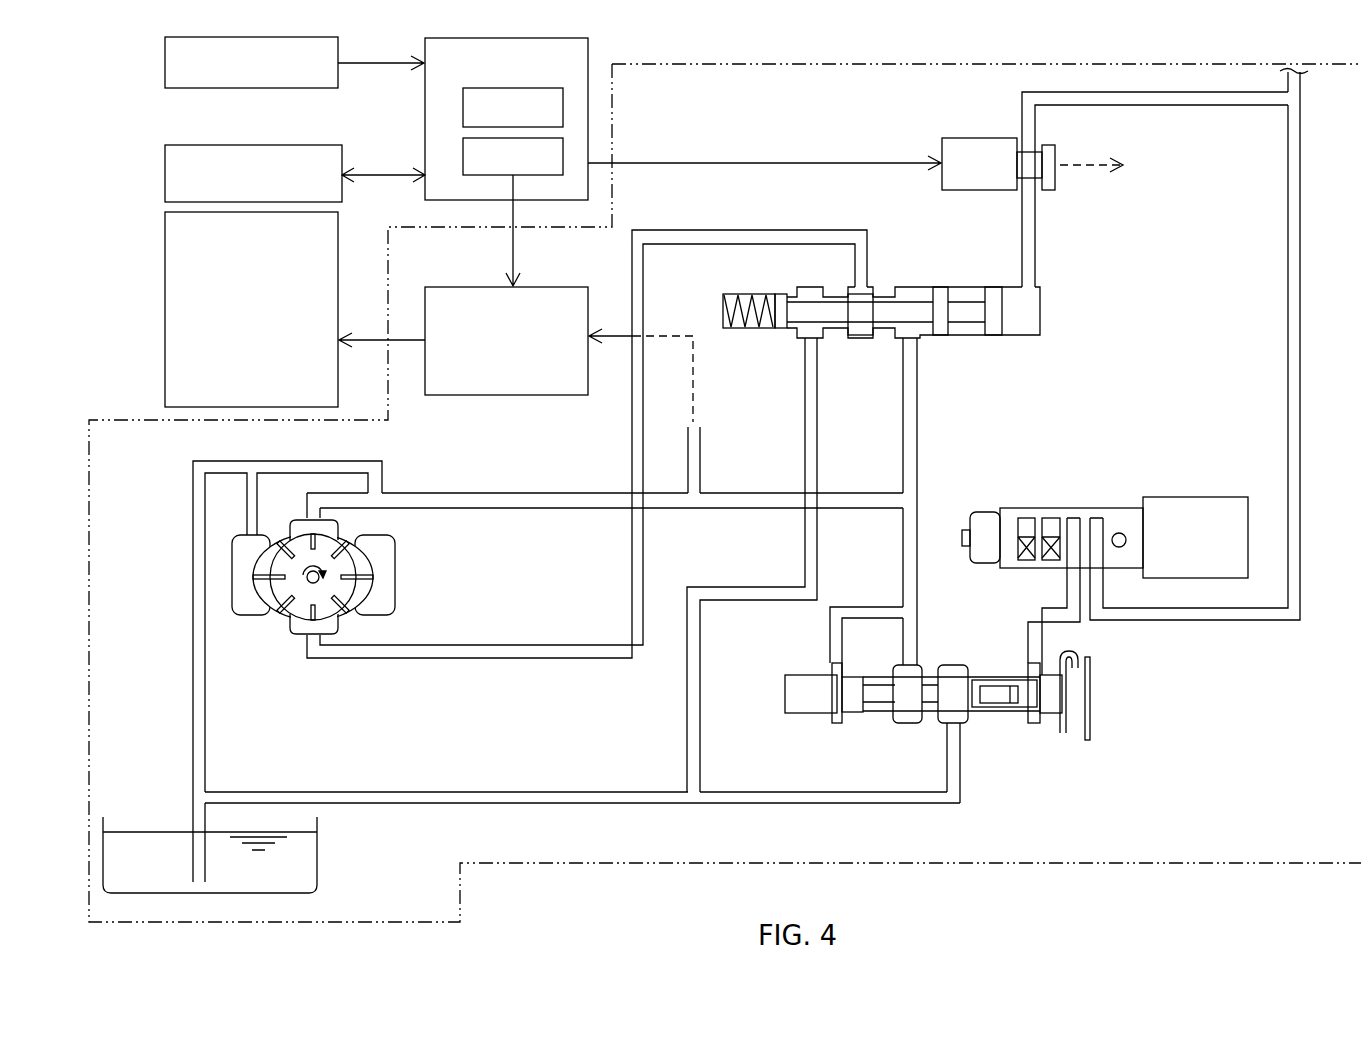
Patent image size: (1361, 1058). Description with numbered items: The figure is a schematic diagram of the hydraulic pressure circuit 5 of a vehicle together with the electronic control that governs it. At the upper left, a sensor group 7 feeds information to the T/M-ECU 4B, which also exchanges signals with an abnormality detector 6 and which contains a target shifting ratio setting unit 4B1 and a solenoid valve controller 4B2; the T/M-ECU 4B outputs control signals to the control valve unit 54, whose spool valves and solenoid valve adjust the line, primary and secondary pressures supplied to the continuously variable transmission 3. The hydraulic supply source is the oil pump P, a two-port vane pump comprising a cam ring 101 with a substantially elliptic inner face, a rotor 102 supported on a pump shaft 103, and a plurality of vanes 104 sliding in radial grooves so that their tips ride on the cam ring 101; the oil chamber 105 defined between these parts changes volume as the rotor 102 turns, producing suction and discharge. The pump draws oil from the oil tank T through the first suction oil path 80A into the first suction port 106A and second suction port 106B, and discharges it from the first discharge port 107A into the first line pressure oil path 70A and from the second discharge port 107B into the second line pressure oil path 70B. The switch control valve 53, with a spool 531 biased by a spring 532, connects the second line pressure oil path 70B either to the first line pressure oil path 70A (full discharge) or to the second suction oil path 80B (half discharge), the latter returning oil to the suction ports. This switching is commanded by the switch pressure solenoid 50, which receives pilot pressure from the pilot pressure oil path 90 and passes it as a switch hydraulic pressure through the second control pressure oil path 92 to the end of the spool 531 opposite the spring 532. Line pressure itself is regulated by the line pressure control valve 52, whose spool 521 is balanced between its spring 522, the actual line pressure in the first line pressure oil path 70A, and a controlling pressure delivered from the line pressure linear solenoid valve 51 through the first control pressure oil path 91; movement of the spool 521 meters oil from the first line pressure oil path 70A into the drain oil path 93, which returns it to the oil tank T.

The sensor group 7 is at (165, 72).
The abnormality detector 6 is at (165, 184).
The continuously variable transmission 3 is at (165, 284).
The T/M-ECU 4B is at (519, 114).
The target shifting ratio setting unit 4B1 is at (463, 99).
The solenoid valve controller 4B2 is at (463, 149).
The control valve unit 54 is at (520, 286).
The switch pressure solenoid 50 is at (972, 138).
The switch control valve 53 is at (877, 308).
The spool 531 is at (903, 300).
The spring 532 is at (738, 328).
The second control pressure oil path 92 is at (1040, 258).
The pilot pressure oil path 90 is at (1302, 495).
The first control pressure oil path 91 is at (1087, 580).
The line pressure linear solenoid valve 51 is at (975, 537).
The line pressure control valve 52 is at (968, 674).
The spool 521 is at (955, 665).
The spring 522 is at (999, 680).
The drain oil path 93 is at (962, 770).
The first line pressure oil path 70A is at (503, 493).
The second line pressure oil path 70B is at (632, 437).
The first suction oil path 80A is at (207, 748).
The second suction oil path 80B is at (818, 433).
The oil pump P is at (336, 577).
The cam ring 101 is at (282, 553).
The rotor 102 is at (298, 603).
The pump shaft 103 is at (313, 583).
The vanes 104 is at (263, 568).
The oil chamber 105 is at (358, 563).
The first suction port 106A is at (240, 585).
The second suction port 106B is at (392, 572).
The first discharge port 107A is at (322, 525).
The second discharge port 107B is at (325, 638).
The oil tank T is at (317, 857).
The hydraulic pressure circuit 5 is at (463, 908).